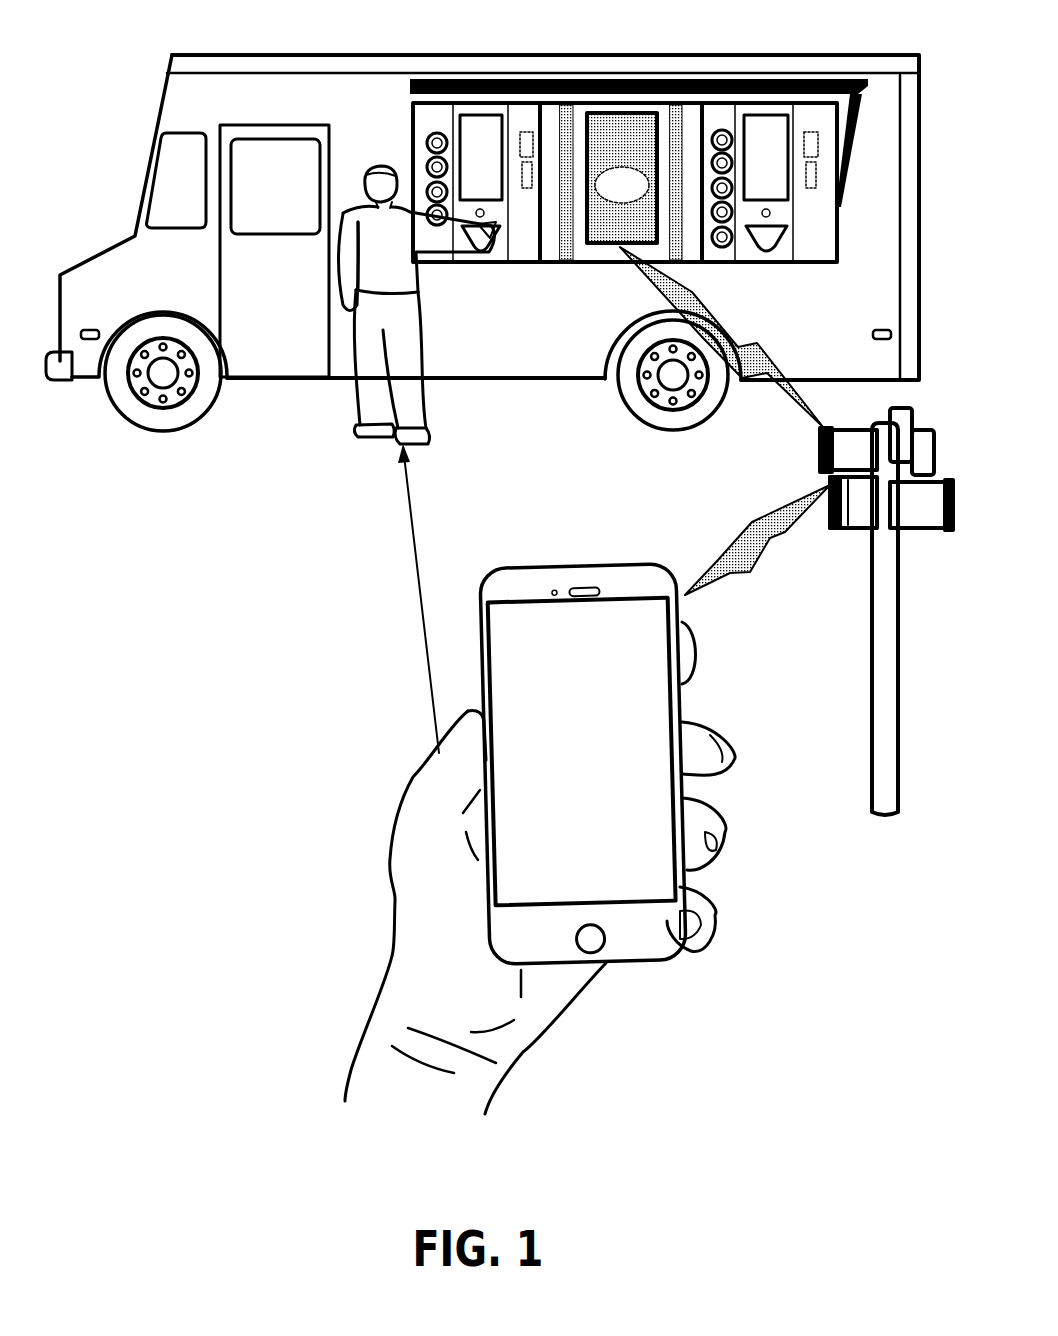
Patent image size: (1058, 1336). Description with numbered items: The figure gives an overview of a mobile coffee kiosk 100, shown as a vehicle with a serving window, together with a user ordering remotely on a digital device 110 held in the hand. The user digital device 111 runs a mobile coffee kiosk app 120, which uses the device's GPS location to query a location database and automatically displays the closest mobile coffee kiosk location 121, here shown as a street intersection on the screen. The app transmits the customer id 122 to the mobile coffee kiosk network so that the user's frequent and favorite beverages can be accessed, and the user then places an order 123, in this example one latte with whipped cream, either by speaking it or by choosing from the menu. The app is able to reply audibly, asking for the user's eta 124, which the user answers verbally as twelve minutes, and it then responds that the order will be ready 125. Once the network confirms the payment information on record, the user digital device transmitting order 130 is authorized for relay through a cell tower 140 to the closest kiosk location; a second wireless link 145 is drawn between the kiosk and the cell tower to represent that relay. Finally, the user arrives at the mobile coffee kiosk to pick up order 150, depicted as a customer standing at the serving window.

The mobile coffee kiosk 100 is at (342, 53).
The digital device 110 is at (390, 883).
The user digital device 111 is at (591, 572).
The mobile coffee kiosk app 120 is at (665, 631).
The mobile coffee kiosk location 121 is at (638, 662).
The customer id 122 is at (653, 705).
The order 123 is at (663, 769).
The eta 124 is at (650, 836).
The order ready response 125 is at (657, 884).
The transmitting order 130 is at (770, 537).
The cell tower 140 is at (818, 430).
The wireless communication link from kiosk 145 is at (757, 360).
The pick up order 150 is at (358, 404).